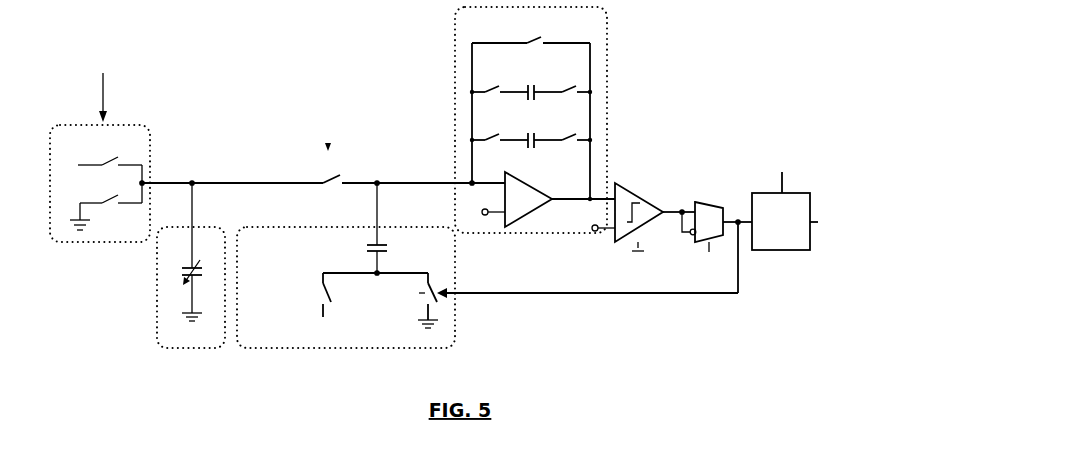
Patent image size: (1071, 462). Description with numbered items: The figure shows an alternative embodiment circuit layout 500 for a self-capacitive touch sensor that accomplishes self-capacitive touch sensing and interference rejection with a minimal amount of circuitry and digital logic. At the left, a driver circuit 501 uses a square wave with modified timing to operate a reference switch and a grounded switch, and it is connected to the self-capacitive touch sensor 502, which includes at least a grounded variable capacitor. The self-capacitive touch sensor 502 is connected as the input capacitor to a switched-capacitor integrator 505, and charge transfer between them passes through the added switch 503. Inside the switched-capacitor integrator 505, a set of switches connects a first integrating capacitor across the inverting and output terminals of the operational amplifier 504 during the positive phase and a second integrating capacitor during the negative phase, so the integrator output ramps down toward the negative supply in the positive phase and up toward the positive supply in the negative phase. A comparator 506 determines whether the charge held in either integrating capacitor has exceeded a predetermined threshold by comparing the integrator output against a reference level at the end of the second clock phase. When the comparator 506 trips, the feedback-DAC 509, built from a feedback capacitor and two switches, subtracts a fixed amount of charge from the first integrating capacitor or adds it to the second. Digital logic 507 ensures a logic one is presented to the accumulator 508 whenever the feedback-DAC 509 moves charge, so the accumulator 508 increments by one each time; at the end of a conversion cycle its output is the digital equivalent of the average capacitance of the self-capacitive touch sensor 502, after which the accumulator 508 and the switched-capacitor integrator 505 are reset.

The circuit layout 500 is at (744, 88).
The driver circuit 501 is at (137, 120).
The self-capacitive touch sensor 502 is at (155, 335).
The added switch 503 is at (343, 180).
The operational amplifier 504 is at (548, 199).
The switched-capacitor integrator 505 is at (610, 72).
The comparator 506 is at (638, 195).
The digital logic 507 is at (713, 202).
The accumulator 508 is at (816, 205).
The feedback-DAC 509 is at (457, 337).